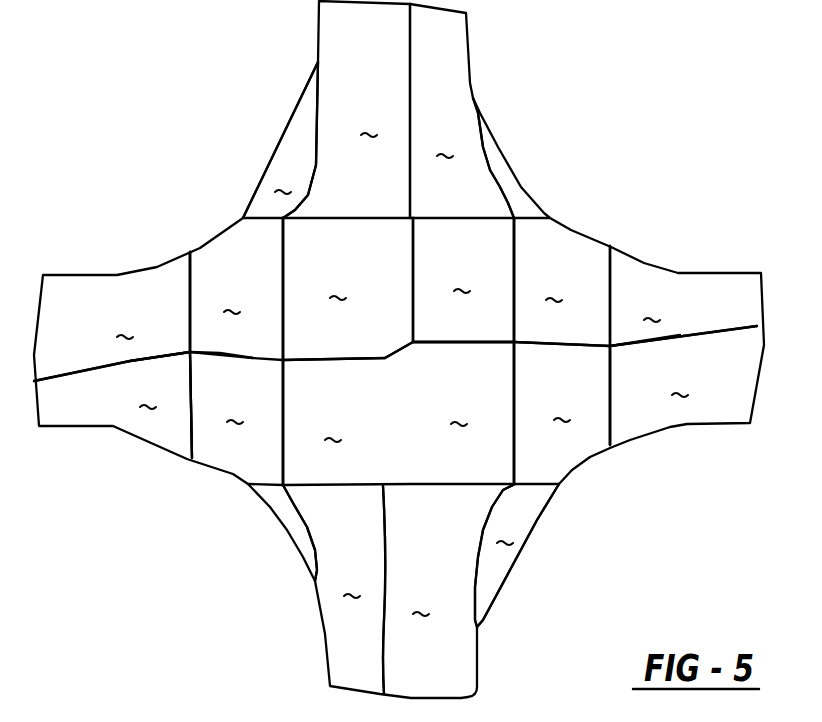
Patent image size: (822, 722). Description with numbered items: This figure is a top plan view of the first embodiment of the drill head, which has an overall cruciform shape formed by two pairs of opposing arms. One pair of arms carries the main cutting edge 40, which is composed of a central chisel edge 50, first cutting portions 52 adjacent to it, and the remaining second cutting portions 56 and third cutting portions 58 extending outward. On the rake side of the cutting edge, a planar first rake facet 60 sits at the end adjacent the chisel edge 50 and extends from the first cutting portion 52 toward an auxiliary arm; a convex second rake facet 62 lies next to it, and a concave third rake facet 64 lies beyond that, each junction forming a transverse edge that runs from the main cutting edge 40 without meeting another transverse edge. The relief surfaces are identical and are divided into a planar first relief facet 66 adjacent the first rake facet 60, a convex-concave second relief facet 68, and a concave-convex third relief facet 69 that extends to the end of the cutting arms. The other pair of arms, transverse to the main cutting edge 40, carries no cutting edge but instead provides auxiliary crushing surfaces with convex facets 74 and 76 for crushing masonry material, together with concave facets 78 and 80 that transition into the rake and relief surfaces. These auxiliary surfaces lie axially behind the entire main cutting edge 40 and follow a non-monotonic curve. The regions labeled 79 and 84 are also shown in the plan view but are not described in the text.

The main cutting edge 40 is at (482, 340).
The chisel edge 50 is at (405, 347).
The first cutting portion 52 is at (316, 358).
The second cutting portion 56 is at (210, 352).
The third cutting portion 58 is at (163, 353).
The first rake facet 60 is at (398, 351).
The second rake facet 62 is at (400, 351).
The third rake facet 64 is at (349, 352).
The first relief facet 66 is at (403, 351).
The second relief facet 68 is at (473, 351).
The third relief facet 69 is at (395, 348).
The convex facet 74 is at (449, 589).
The convex facet 76 is at (398, 349).
The concave facet 78 is at (503, 191).
The top panel 79 is at (396, 111).
The concave facet 80 is at (280, 140).
The corner gusset 84 is at (517, 555).